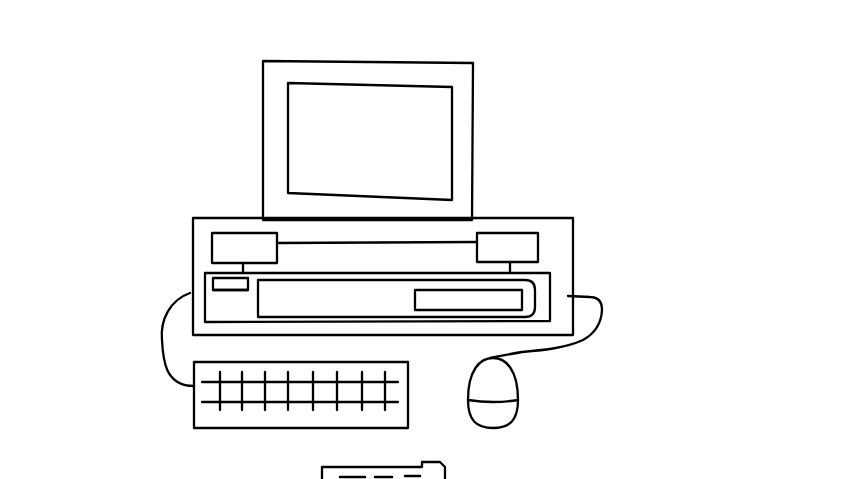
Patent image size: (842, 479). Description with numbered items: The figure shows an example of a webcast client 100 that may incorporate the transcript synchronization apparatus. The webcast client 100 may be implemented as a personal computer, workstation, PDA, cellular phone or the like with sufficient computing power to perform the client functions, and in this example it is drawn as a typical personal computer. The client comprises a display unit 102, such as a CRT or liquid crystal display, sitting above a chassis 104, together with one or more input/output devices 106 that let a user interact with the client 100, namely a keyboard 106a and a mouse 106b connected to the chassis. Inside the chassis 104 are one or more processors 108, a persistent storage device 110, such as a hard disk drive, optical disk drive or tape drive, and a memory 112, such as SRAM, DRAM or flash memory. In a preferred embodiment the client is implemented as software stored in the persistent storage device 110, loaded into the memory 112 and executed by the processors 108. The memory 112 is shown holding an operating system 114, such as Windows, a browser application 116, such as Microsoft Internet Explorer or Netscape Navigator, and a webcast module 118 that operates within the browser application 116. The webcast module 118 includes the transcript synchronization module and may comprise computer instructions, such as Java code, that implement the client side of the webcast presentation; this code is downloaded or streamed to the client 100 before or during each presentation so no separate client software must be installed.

The webcast client 100 is at (475, 82).
The display unit 102 is at (395, 150).
The chassis 104 is at (575, 235).
The input/output devices 106 is at (140, 357).
The keyboard 106a is at (262, 432).
The mouse 106b is at (507, 428).
The processor 108 is at (258, 254).
The persistent storage device 110 is at (520, 253).
The memory 112 is at (233, 284).
The operating system 114 is at (213, 288).
The browser application 116 is at (331, 309).
The webcast module 118 is at (483, 308).